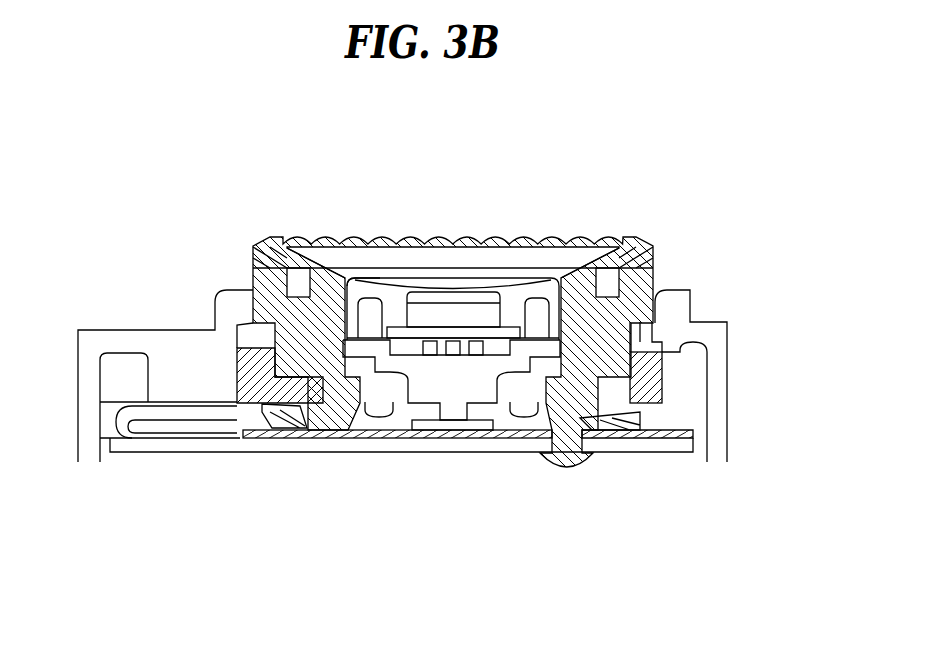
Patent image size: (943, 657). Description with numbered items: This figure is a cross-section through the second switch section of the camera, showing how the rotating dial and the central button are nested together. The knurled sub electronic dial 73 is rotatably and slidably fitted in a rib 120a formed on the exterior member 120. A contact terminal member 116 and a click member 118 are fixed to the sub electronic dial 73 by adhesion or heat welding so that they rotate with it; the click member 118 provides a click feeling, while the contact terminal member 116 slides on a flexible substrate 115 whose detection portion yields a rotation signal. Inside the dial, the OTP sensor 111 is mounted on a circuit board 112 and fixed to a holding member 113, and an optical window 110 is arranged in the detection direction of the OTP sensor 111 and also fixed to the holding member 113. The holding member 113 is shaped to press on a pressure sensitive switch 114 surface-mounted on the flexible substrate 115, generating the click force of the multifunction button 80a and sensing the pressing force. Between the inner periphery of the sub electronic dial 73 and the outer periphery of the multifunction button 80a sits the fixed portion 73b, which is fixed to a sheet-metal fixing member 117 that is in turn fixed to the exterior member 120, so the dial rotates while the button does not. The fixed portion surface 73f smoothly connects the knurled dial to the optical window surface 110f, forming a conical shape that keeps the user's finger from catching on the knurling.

The sub electronic dial 73 is at (638, 252).
The fixed portion surface 73f is at (325, 268).
The fixed portion 73b is at (567, 272).
The multifunction button 80a is at (451, 271).
The optical window 110 is at (537, 292).
The optical window surface 110f is at (373, 283).
The OTP sensor 111 is at (484, 320).
The circuit board 112 is at (418, 330).
The holding member 113 is at (443, 377).
The pressure sensitive switch 114 is at (460, 440).
The flexible substrate 115 is at (400, 440).
The contact terminal member 116 is at (290, 432).
The fixing member 117 is at (248, 443).
The click member 118 is at (662, 394).
The exterior member 120 is at (217, 306).
The rib 120a is at (248, 318).